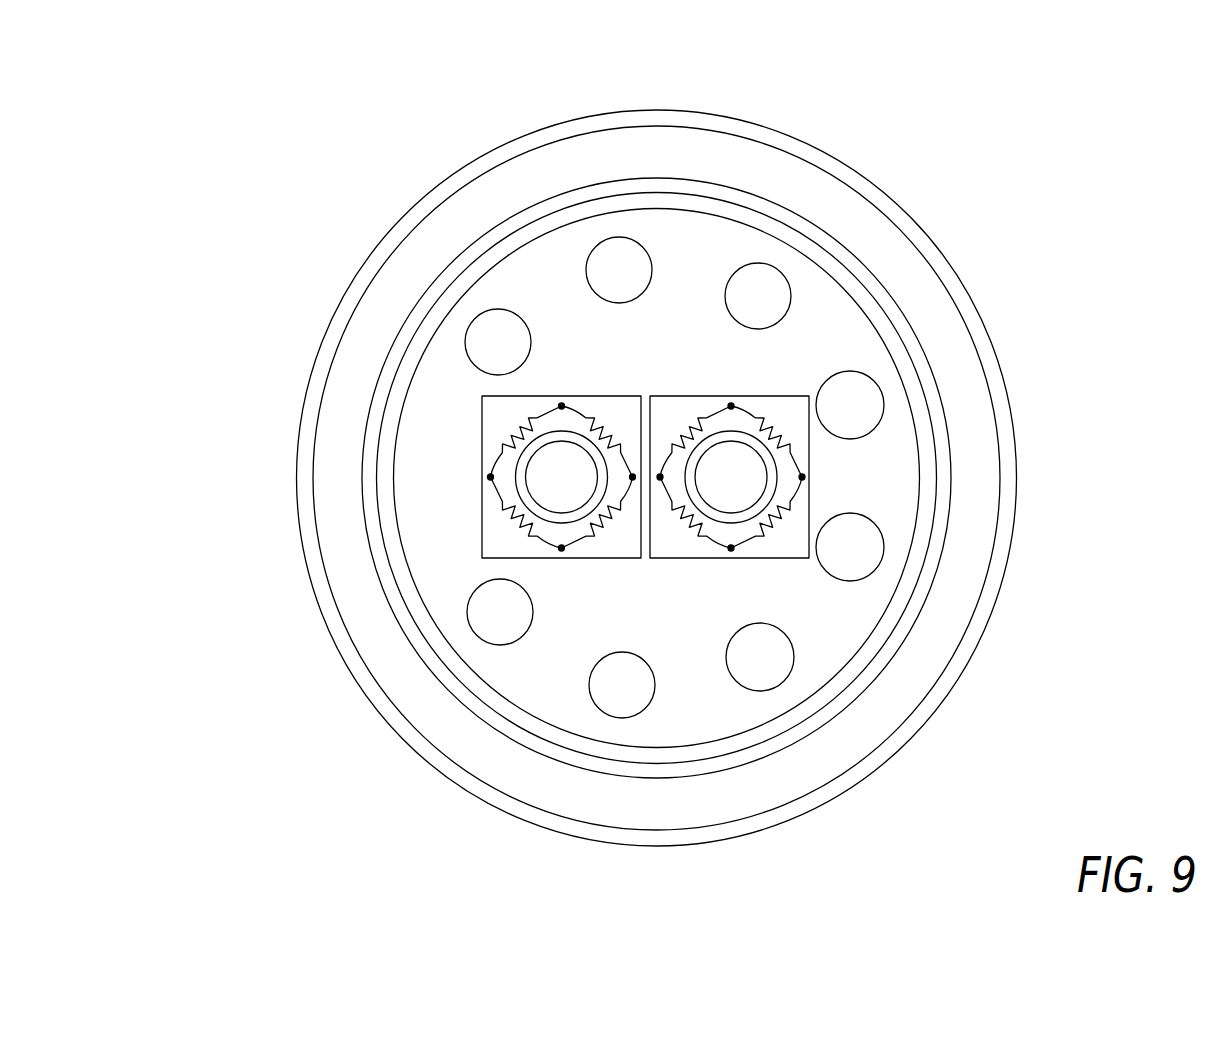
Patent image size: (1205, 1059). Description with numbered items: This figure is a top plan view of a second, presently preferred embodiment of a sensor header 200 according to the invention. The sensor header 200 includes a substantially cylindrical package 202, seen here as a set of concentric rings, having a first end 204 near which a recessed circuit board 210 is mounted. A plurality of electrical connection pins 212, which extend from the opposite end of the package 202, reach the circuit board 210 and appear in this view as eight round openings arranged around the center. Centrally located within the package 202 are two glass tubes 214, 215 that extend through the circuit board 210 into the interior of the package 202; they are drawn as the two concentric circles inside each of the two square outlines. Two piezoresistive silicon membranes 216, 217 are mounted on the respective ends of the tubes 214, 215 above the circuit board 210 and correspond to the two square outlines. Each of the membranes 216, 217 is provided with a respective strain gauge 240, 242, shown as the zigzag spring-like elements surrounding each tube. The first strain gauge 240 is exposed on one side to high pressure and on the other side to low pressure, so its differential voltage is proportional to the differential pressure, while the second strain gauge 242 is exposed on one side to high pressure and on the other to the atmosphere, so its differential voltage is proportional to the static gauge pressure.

The sensor header 200 is at (330, 722).
The package 202 is at (905, 212).
The first end 204 is at (502, 716).
The circuit board 210 is at (823, 652).
The electrical connection pins 212 is at (758, 296).
The glass tube 214 is at (803, 477).
The glass tube 215 is at (518, 493).
The piezoresistive silicon membrane 216 is at (886, 493).
The piezoresistive silicon membrane 217 is at (423, 387).
The first strain gauge 240 is at (777, 515).
The second strain gauge 242 is at (497, 458).